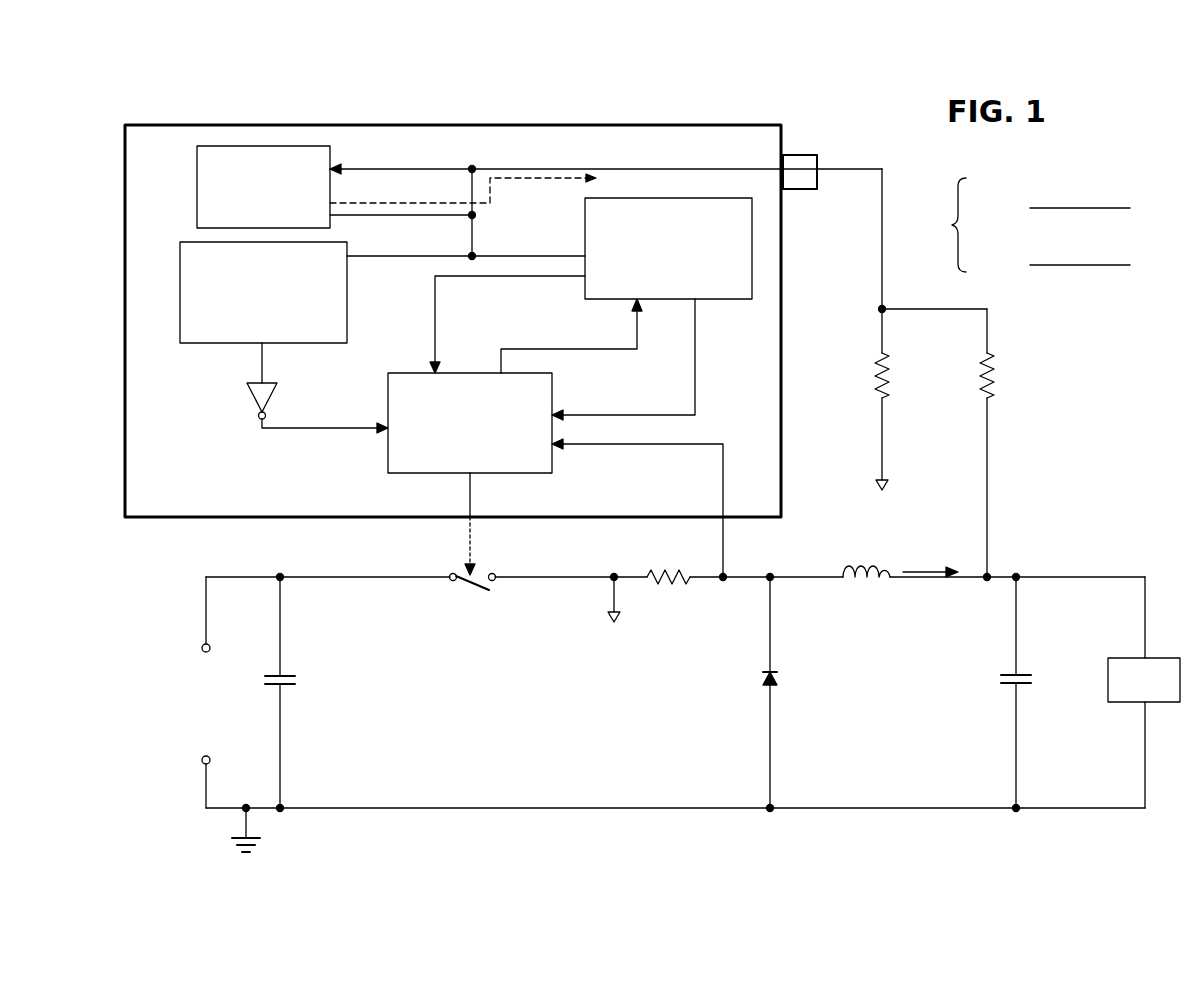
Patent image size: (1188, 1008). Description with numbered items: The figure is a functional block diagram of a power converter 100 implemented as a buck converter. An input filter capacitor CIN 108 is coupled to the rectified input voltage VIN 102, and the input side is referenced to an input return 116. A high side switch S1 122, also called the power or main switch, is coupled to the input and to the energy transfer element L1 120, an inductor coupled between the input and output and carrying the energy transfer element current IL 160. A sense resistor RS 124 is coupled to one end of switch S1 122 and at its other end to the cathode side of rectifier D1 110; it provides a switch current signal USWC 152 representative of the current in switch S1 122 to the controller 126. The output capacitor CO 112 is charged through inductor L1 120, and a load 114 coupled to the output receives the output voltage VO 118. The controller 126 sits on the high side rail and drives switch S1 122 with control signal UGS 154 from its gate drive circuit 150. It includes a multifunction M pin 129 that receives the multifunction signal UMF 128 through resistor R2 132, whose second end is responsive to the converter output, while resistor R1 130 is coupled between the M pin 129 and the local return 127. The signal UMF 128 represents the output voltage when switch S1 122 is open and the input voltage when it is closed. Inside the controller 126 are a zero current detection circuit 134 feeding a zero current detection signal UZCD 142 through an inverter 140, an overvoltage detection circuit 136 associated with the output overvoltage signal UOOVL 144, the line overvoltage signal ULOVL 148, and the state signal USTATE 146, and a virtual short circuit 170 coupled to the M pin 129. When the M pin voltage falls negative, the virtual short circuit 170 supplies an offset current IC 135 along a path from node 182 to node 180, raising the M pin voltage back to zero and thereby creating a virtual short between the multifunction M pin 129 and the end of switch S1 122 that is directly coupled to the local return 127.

The power converter 100 is at (1115, 81).
The input voltage VIN 102 is at (183, 705).
The input filter capacitor CIN 108 is at (325, 700).
The rectifier D1 110 is at (797, 670).
The output capacitor CO 112 is at (966, 669).
The load 114 is at (1120, 704).
The input return 116 is at (262, 845).
The output voltage VO 118 is at (1073, 670).
The energy transfer element L1 120 is at (876, 601).
The high side switch S1 122 is at (482, 620).
The sense resistor RS 124 is at (673, 618).
The controller 126 is at (183, 519).
The local return 127 is at (890, 487).
The multifunction signal UMF 128 is at (904, 200).
The multifunction M pin 129 is at (812, 152).
The resistor R1 130 is at (815, 379).
The resistor R2 132 is at (1033, 379).
The zero current detection circuit 134 is at (196, 345).
The offset current IC 135 is at (511, 210).
The overvoltage detection circuit 136 is at (585, 238).
The inverter 140 is at (247, 398).
The zero current detection signal UZCD 142 is at (340, 406).
The output overvoltage signal UOOVL 144 is at (726, 360).
The state signal USTATE 146 is at (550, 303).
The line overvoltage signal ULOVL 148 is at (398, 328).
The gate drive circuit 150 is at (388, 461).
The switch current signal USWC 152 is at (630, 456).
The control signal UGS 154 is at (520, 542).
The energy transfer element current IL 160 is at (943, 528).
The virtual short circuit 170 is at (197, 160).
The node 180 is at (474, 166).
The node 182 is at (470, 214).